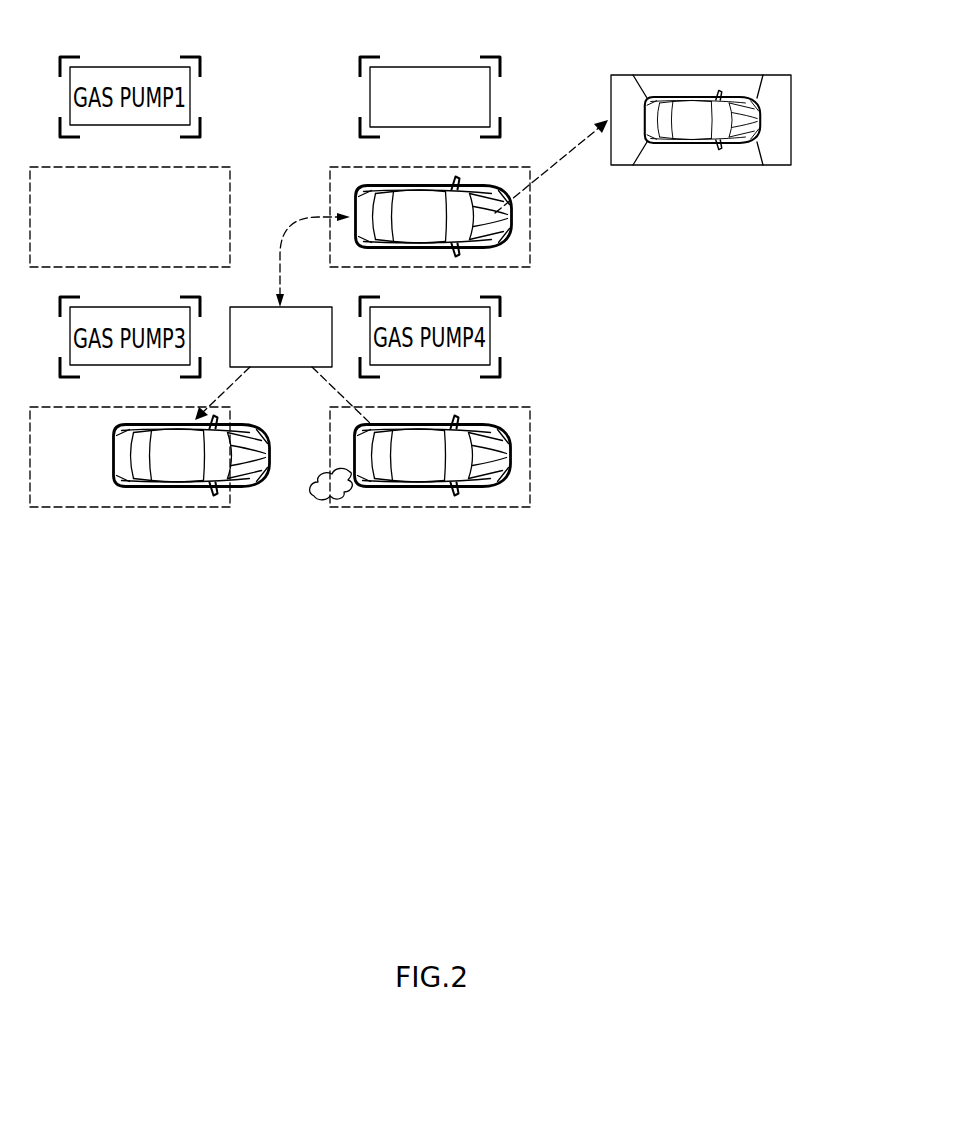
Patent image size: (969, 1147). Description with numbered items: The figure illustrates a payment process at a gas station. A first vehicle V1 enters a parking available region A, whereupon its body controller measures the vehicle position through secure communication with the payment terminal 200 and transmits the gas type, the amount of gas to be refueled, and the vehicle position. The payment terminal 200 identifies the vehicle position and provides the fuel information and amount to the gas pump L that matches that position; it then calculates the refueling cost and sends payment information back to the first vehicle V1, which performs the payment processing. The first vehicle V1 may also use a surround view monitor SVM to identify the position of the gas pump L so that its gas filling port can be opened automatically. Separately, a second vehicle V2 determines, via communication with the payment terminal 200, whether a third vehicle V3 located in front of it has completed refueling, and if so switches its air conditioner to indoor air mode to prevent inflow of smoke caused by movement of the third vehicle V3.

The payment terminal 200 is at (253, 306).
The gas pump L is at (428, 67).
The parking available region A is at (352, 166).
The first vehicle V1 is at (512, 216).
The second vehicle V2 is at (184, 490).
The third vehicle V3 is at (419, 490).
The surround view monitor SVM is at (701, 137).